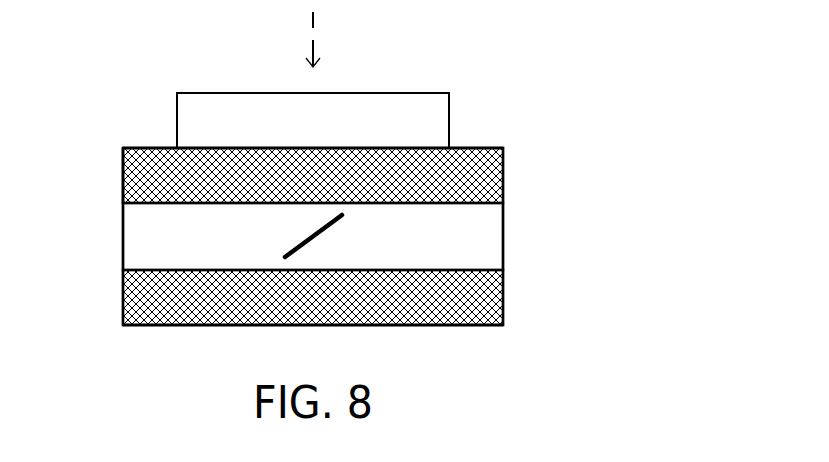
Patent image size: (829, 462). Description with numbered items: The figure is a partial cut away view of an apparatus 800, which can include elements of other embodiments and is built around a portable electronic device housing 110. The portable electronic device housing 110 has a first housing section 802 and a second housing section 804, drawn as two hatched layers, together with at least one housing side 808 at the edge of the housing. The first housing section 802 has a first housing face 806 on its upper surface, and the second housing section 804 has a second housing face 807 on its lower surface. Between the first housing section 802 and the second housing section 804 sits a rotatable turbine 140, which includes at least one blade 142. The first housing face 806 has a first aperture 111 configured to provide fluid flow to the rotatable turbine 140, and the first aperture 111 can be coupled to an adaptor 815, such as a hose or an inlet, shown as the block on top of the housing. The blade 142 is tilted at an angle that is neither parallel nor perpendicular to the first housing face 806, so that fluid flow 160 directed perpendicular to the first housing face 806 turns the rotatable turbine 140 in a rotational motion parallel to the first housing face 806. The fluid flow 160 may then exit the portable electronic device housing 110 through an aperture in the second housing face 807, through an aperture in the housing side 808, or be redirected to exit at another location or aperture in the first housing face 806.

The apparatus 800 is at (640, 121).
The portable electronic device housing 110 is at (496, 113).
The first aperture 111 is at (360, 70).
The adaptor 815 is at (219, 92).
The fluid flow 160 is at (311, 43).
The first housing section 802 is at (505, 178).
The first housing face 806 is at (140, 133).
The housing side 808 is at (93, 188).
The rotatable turbine 140 is at (505, 243).
The blade 142 is at (320, 232).
The second housing section 804 is at (505, 306).
The second housing face 807 is at (150, 340).